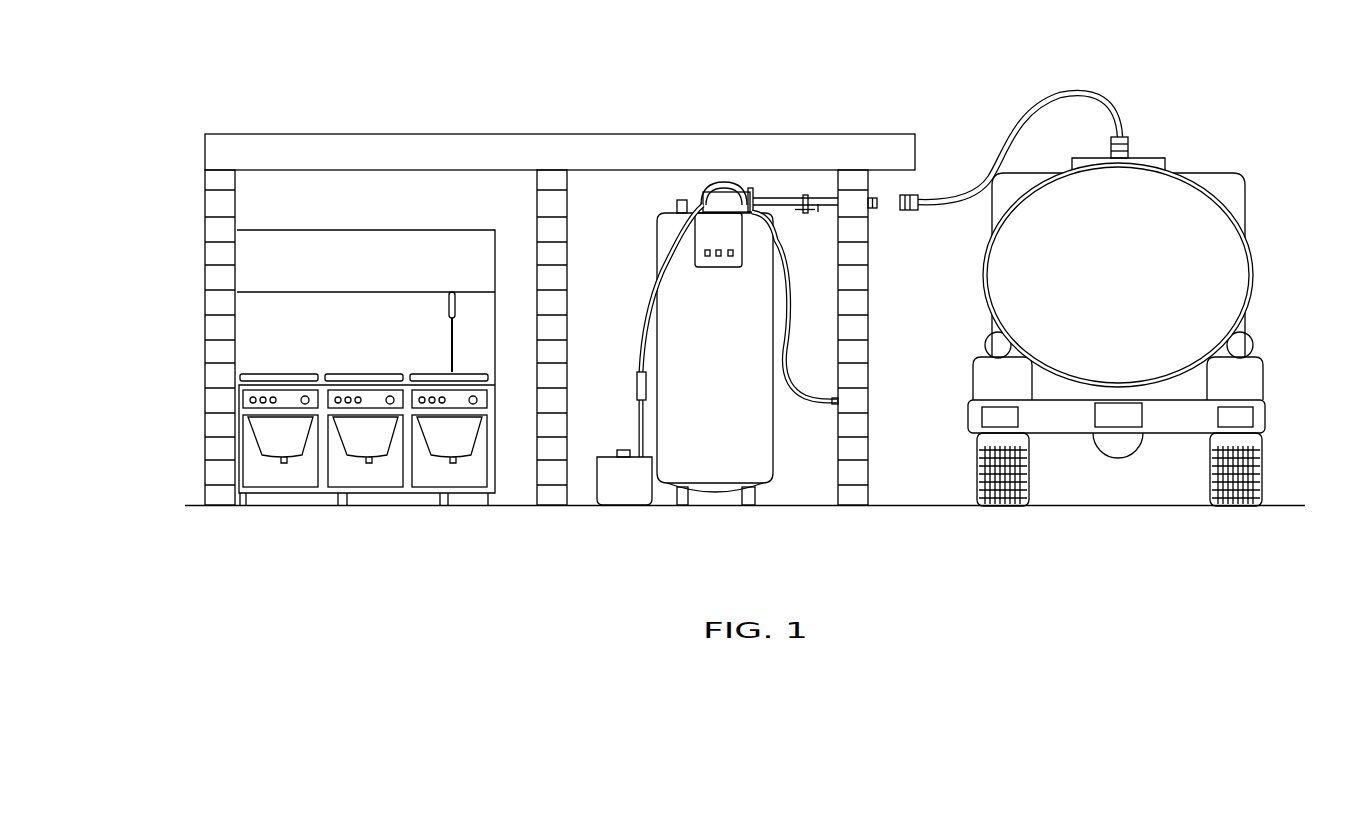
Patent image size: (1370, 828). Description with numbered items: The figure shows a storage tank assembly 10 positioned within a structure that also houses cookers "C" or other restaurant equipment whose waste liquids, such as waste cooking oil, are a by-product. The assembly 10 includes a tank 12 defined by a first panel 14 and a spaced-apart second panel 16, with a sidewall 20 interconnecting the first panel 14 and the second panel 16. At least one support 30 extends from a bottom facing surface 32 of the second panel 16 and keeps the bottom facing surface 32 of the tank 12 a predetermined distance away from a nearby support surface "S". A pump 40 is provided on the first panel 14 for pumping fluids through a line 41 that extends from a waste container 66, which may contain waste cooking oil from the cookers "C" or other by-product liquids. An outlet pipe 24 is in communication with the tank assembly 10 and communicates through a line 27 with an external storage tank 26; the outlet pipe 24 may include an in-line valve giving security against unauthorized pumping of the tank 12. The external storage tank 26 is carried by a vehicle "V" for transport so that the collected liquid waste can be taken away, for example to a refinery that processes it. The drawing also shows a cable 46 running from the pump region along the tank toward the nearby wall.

The storage tank assembly 10 is at (647, 263).
The tank 12 is at (655, 233).
The first panel 14 is at (663, 212).
The second panel 16 is at (662, 487).
The sidewall 20 is at (757, 422).
The outlet pipe 24 is at (800, 193).
The external storage tank 26 is at (1173, 220).
The line 27 is at (1042, 97).
The support 30 is at (683, 503).
The bottom facing surface 32 is at (770, 488).
The pump 40 is at (747, 187).
The line 41 is at (635, 400).
The power cable 46 is at (767, 210).
The waste container 66 is at (622, 497).
The cookers C is at (240, 438).
The support surface S is at (830, 507).
The collection vehicle V is at (1151, 309).